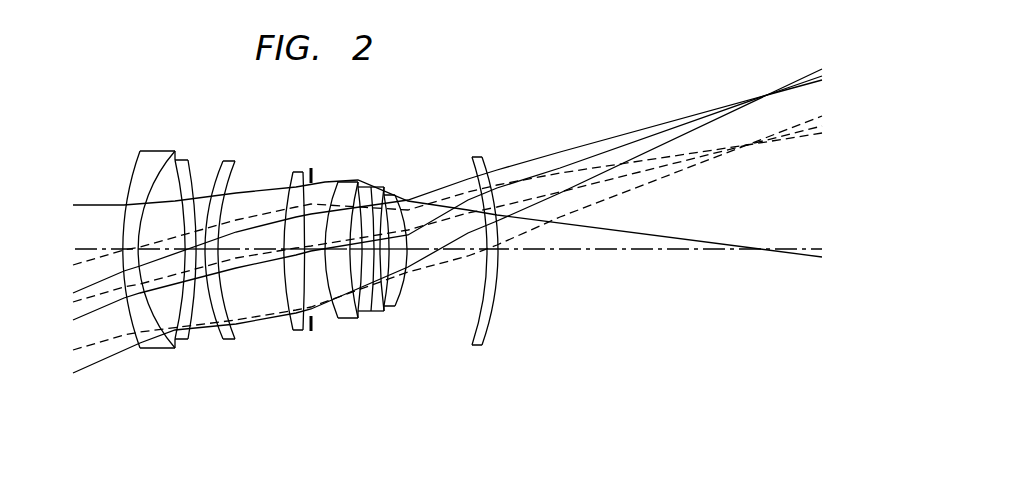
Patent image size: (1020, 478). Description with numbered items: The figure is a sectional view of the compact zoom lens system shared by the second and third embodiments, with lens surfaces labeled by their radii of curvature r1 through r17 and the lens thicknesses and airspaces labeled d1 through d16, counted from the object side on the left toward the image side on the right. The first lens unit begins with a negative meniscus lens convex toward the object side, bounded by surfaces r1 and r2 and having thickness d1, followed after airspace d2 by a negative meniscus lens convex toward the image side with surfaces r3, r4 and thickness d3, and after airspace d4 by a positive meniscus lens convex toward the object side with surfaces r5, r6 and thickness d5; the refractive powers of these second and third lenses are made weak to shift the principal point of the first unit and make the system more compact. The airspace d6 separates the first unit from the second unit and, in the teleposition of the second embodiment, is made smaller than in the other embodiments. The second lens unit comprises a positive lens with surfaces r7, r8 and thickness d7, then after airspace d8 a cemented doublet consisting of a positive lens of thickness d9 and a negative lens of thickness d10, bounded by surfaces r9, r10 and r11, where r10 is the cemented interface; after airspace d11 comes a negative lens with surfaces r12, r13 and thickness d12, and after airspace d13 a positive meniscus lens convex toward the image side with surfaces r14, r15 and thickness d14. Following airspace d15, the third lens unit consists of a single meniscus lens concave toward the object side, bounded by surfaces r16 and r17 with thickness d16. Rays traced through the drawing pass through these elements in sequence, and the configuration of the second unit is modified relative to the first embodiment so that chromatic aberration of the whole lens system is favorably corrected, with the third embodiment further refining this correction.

The lens thickness d1 is at (128, 252).
The airspace d2 is at (180, 250).
The lens thickness d3 is at (190, 250).
The airspace d4 is at (200, 250).
The lens thickness d5 is at (211, 250).
The airspace d6 is at (247, 250).
The lens thickness d7 is at (290, 250).
The airspace d8 is at (312, 250).
The lens thickness d9 is at (333, 250).
The lens thickness d10 is at (352, 250).
The airspace d11 is at (367, 250).
The lens thickness d12 is at (377, 250).
The airspace d13 is at (392, 250).
The lens thickness d14 is at (420, 250).
The airspace d15 is at (456, 250).
The lens thickness d16 is at (493, 258).
The radius of curvature r1 is at (130, 322).
The radius of curvature r2 is at (153, 316).
The radius of curvature r3 is at (180, 316).
The radius of curvature r4 is at (193, 318).
The radius of curvature r5 is at (221, 333).
The radius of curvature r6 is at (236, 336).
The radius of curvature r7 is at (291, 318).
The radius of curvature r8 is at (304, 322).
The radius of curvature r9 is at (336, 312).
The radius of curvature r10 is at (353, 307).
The radius of curvature r11 is at (360, 303).
The radius of curvature r12 is at (371, 305).
The radius of curvature r13 is at (381, 298).
The radius of curvature r14 is at (391, 297).
The radius of curvature r15 is at (404, 286).
The radius of curvature r16 is at (479, 322).
The radius of curvature r17 is at (489, 328).